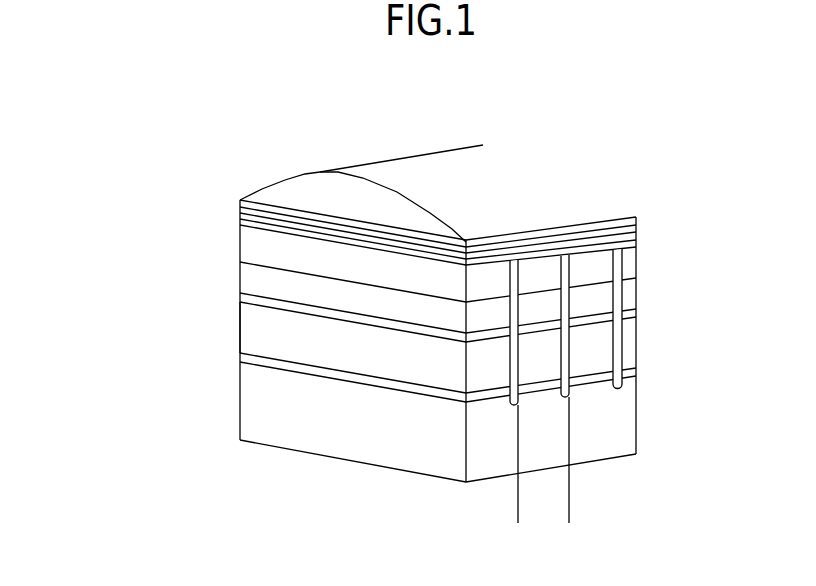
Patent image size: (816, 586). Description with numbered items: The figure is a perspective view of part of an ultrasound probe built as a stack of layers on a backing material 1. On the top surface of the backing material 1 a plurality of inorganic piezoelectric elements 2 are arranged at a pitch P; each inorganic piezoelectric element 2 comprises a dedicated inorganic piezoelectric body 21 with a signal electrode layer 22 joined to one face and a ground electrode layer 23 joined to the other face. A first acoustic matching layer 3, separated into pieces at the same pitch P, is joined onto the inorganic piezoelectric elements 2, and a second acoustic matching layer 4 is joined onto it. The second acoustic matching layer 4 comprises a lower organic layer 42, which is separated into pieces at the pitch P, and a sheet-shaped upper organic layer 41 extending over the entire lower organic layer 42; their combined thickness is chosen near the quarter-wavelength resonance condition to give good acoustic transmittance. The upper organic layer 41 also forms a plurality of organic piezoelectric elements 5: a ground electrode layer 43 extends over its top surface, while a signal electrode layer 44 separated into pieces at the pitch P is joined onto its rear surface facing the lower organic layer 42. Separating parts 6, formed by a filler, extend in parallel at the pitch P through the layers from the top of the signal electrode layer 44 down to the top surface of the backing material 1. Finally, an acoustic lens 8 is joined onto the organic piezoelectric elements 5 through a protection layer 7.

The backing material 1 is at (630, 421).
The inorganic piezoelectric element 2 is at (646, 345).
The first acoustic matching layer 3 is at (638, 295).
The second acoustic matching layer 4 is at (710, 210).
The organic piezoelectric element 5 is at (164, 175).
The separating part 6 is at (510, 366).
The protection layer 7 is at (638, 218).
The acoustic lens 8 is at (400, 160).
The inorganic piezoelectric body 21 is at (240, 327).
The signal electrode layer 22 is at (240, 355).
The ground electrode layer 23 is at (240, 297).
The upper organic layer 41 is at (240, 219).
The lower organic layer 42 is at (638, 259).
The ground electrode layer 43 is at (240, 208).
The signal electrode layer 44 is at (240, 229).
The pitch P is at (518, 513).